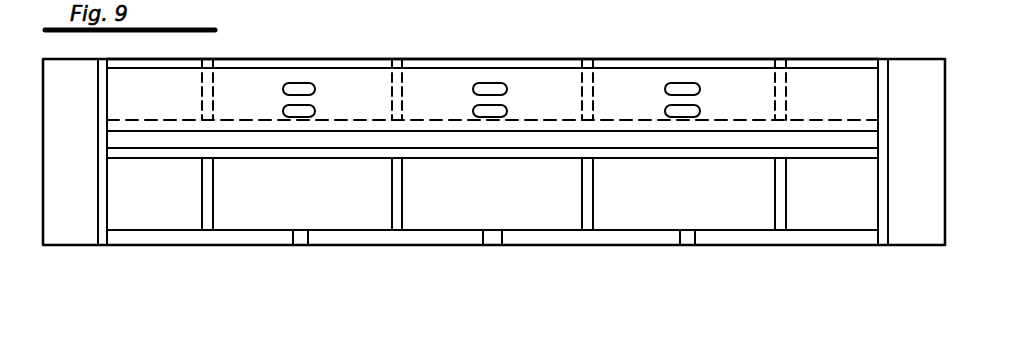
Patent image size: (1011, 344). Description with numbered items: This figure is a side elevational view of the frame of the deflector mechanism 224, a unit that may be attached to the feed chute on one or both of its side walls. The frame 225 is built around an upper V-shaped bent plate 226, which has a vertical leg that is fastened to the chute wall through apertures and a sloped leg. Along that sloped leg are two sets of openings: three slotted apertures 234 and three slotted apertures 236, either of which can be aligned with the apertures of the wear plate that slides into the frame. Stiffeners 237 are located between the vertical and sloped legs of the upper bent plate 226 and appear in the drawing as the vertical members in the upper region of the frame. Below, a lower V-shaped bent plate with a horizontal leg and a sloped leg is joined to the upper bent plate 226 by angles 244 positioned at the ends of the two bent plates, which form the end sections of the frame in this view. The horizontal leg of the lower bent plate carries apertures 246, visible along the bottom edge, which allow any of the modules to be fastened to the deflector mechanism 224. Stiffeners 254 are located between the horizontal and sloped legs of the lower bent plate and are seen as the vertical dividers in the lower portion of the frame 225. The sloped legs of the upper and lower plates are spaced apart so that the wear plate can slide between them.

The deflector mechanism 224 is at (170, 246).
The frame 225 is at (563, 280).
The upper V-shaped bent plate 226 is at (178, 62).
The slotted apertures 234 is at (316, 112).
The slotted apertures 236 is at (682, 83).
The stiffeners 237 is at (200, 97).
The angles 244 is at (73, 246).
The apertures 246 is at (297, 247).
The stiffeners 254 is at (214, 186).